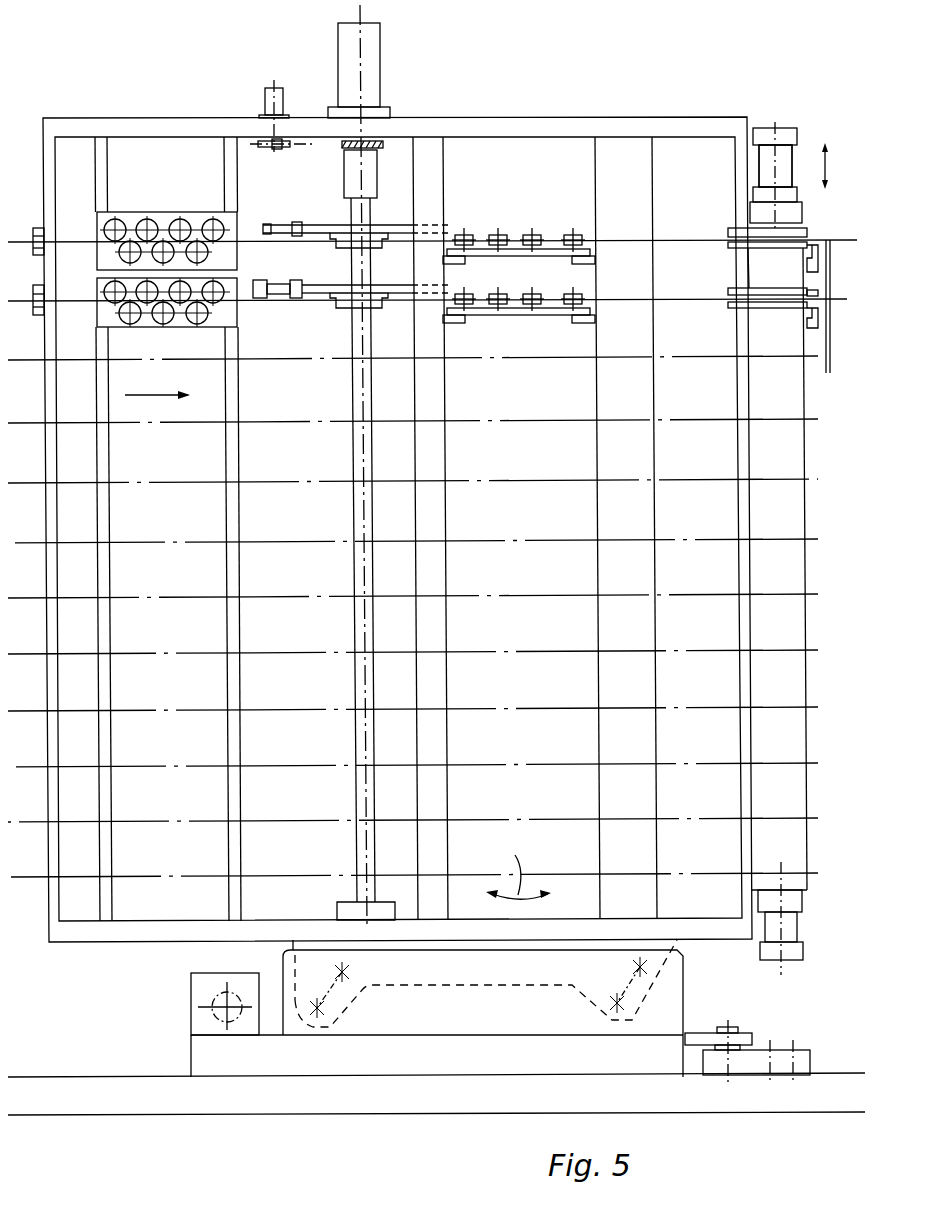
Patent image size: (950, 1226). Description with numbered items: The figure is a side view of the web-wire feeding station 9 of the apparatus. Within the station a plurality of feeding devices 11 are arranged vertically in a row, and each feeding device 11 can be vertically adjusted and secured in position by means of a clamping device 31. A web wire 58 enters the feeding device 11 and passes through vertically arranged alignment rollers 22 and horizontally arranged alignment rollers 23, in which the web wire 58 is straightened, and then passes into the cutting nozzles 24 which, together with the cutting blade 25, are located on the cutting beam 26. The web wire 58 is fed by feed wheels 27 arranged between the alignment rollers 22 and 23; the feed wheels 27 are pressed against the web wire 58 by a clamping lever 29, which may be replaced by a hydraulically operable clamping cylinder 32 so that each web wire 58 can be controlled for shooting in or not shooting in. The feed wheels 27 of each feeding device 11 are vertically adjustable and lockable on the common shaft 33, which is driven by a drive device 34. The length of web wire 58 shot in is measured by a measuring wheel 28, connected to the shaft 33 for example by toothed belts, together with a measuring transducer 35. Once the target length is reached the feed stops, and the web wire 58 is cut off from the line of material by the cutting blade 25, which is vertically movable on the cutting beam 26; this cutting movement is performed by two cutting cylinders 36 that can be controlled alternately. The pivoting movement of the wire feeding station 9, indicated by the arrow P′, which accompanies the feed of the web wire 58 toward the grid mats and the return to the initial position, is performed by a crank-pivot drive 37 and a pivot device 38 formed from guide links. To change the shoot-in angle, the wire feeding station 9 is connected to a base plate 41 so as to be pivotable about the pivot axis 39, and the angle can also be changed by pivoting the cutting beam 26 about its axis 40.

The web-wire feeding station 9 is at (432, 529).
The feeding device 11 is at (562, 193).
The vertically arranged alignment rollers 22 is at (128, 216).
The horizontally arranged alignment rollers 23 is at (527, 237).
The cutting nozzles 24 is at (797, 224).
The cutting blade 25 is at (815, 318).
The cutting beam 26 is at (790, 632).
The feed wheels 27 is at (382, 231).
The measuring wheel 28 is at (290, 140).
The clamping lever 29 is at (270, 226).
The clamping device 31 is at (531, 233).
The hydraulically operable clamping cylinder 32 is at (233, 210).
The shaft 33 is at (355, 518).
The drive device 34 is at (372, 45).
The measuring transducer 35 is at (267, 100).
The cutting cylinder 36 is at (787, 133).
The crank-pivot drive 37 is at (215, 1012).
The pivot device 38 is at (342, 972).
The pivot axis 39 is at (728, 1026).
The axis 40 is at (770, 126).
The base plate 41 is at (148, 1104).
The web wire 58 is at (843, 292).